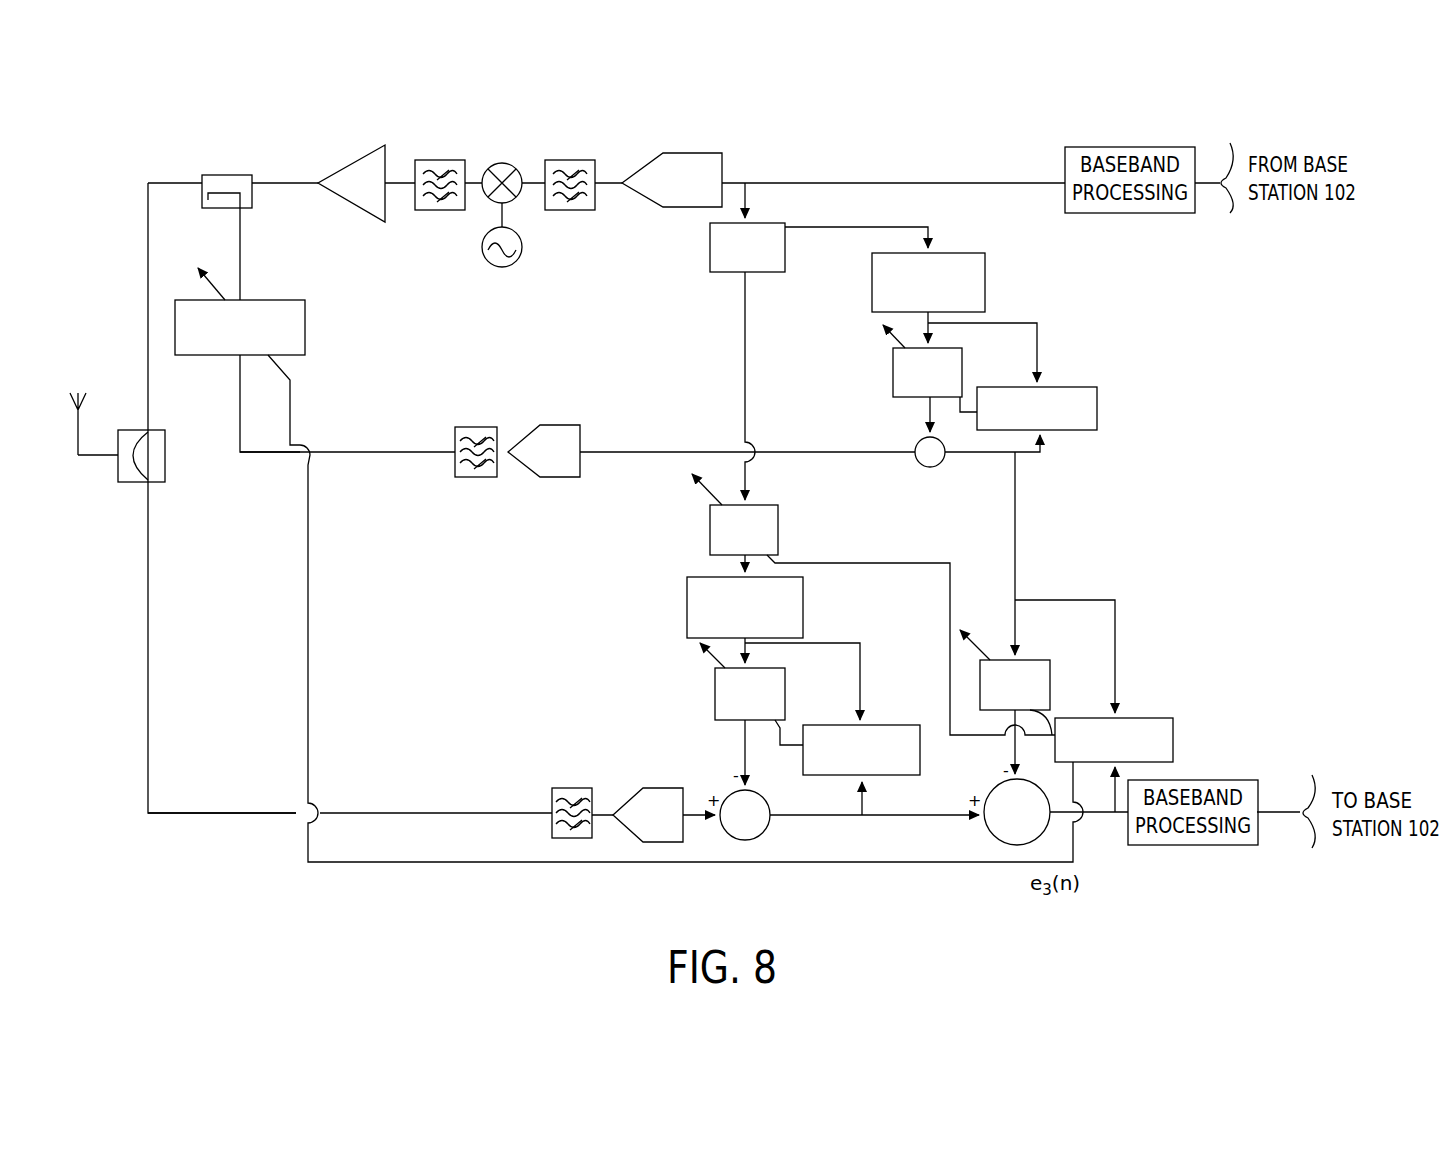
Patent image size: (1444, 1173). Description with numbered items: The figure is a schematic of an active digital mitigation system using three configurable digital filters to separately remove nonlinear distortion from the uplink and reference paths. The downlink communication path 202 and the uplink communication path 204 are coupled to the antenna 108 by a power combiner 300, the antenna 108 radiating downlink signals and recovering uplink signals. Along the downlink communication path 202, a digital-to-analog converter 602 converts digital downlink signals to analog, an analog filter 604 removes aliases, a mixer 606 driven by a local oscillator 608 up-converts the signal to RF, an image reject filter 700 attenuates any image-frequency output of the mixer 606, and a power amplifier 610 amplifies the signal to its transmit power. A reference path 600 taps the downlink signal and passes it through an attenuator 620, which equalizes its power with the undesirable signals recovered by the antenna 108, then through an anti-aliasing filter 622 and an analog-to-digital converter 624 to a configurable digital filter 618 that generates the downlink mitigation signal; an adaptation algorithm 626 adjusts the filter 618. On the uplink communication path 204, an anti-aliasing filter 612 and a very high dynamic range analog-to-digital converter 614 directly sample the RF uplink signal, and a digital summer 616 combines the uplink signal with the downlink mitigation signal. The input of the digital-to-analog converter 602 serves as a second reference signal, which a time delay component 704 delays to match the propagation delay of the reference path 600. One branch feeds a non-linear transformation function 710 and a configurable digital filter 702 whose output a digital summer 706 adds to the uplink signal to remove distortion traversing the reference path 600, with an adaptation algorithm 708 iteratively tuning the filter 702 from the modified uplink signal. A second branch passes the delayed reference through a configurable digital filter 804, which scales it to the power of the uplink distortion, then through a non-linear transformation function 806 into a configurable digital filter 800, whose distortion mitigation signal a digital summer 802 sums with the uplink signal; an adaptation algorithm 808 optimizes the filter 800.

The downlink communication path 202 is at (183, 148).
The power amplifier 610 is at (350, 150).
The image reject filter 700 is at (440, 160).
The mixer 606 is at (506, 163).
The analog filter 604 is at (570, 160).
The digital-to-analog converter 602 is at (690, 153).
The local oscillator 608 is at (495, 265).
The time delay component 704 is at (785, 262).
The non-linear transformation function 710 is at (985, 270).
The configurable digital filter 702 is at (962, 382).
The adaptation algorithm 708 is at (1077, 387).
The digital summer 706 is at (928, 468).
The attenuator 620 is at (280, 300).
The antenna 108 is at (80, 384).
The power combiner 300 is at (165, 452).
The reference path 600 is at (284, 476).
The anti-aliasing filter 622 is at (475, 427).
The analog-to-digital converter 624 is at (558, 425).
The configurable digital filter 804 is at (778, 532).
The non-linear transformation function 806 is at (803, 610).
The configurable digital filter 800 is at (785, 695).
The adaptation algorithm 808 is at (890, 725).
The anti-aliasing filter 612 is at (575, 788).
The analog-to-digital converter 614 is at (662, 788).
The digital summer 802 is at (766, 830).
The digital summer 616 is at (985, 827).
The configurable digital filter 618 is at (1050, 672).
The adaptation algorithm 626 is at (1173, 740).
The uplink communication path 204 is at (234, 830).